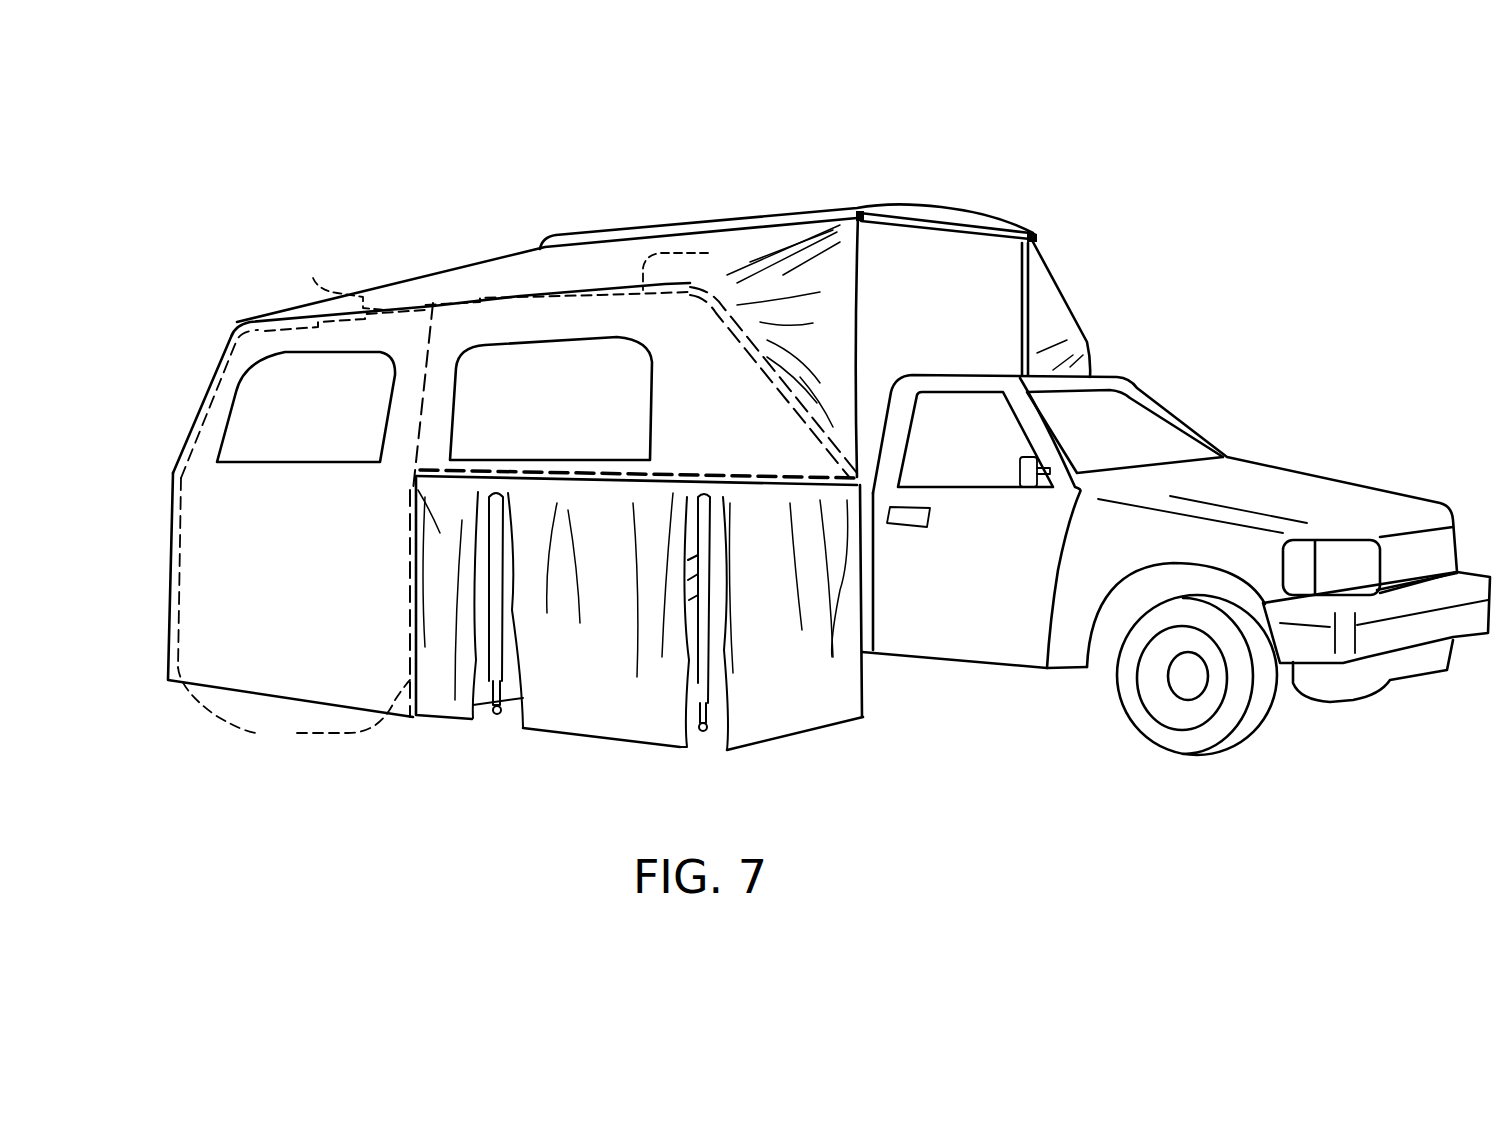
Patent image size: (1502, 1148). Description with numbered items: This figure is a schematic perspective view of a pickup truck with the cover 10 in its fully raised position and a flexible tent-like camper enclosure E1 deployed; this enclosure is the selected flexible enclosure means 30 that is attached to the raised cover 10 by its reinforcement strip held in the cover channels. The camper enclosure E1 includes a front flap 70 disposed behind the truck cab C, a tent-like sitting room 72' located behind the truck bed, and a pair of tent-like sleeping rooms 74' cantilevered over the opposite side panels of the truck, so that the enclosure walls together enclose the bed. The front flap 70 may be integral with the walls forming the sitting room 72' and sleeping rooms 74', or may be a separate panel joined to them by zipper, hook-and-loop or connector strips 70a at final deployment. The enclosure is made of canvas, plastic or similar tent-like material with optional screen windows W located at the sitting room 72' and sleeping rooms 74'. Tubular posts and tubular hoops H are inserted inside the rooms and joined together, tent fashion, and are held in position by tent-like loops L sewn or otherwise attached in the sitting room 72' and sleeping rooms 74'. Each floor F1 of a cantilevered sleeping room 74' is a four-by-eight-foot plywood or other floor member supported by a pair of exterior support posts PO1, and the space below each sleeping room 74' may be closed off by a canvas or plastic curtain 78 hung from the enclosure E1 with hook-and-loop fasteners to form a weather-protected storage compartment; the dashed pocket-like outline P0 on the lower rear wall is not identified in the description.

The flexible enclosure means 30 is at (293, 302).
The camper enclosure E1 is at (382, 283).
The cover 10 is at (650, 221).
The sleeping rooms 74' is at (846, 273).
The tubular hoops H is at (483, 300).
The tent-like loops L is at (513, 272).
The sitting room 72' is at (418, 468).
The screen windows W is at (290, 427).
The floor F1 is at (735, 473).
The curtain 78 is at (443, 571).
The exterior support posts PO1 is at (490, 712).
The pocket P0 is at (294, 710).
The front flap 70 is at (919, 253).
The connector strips 70a is at (845, 252).
The truck cab C is at (1128, 430).